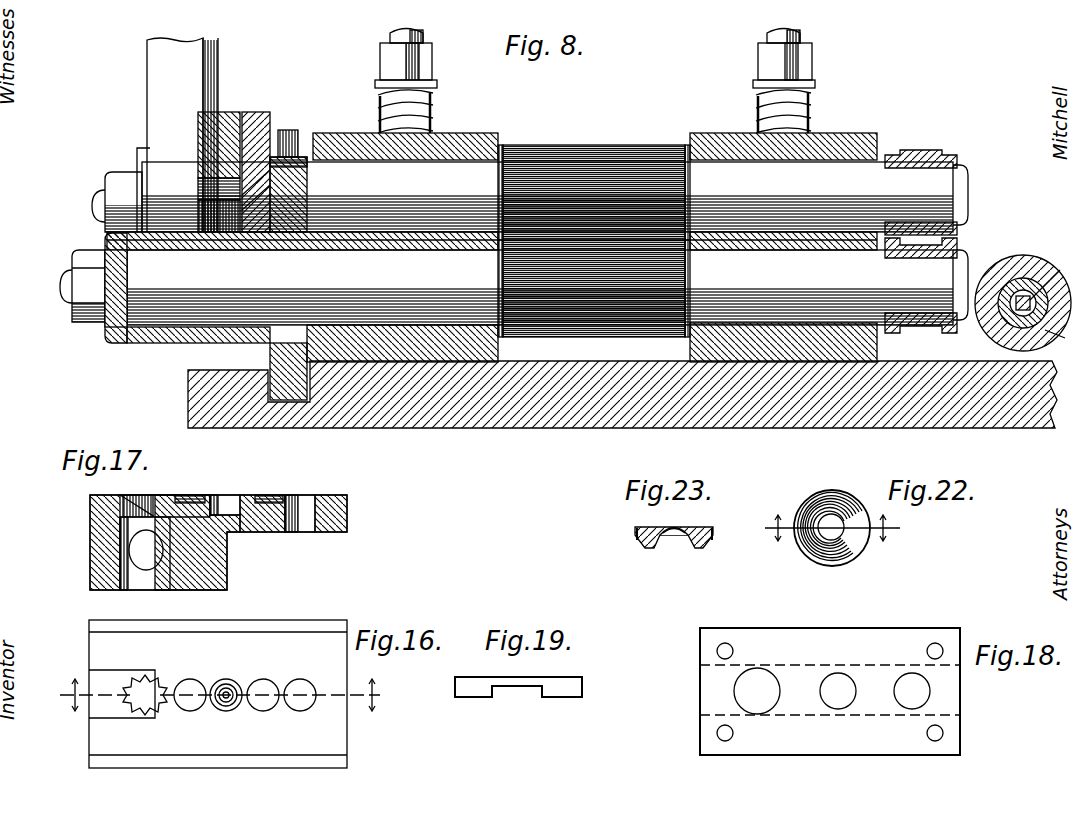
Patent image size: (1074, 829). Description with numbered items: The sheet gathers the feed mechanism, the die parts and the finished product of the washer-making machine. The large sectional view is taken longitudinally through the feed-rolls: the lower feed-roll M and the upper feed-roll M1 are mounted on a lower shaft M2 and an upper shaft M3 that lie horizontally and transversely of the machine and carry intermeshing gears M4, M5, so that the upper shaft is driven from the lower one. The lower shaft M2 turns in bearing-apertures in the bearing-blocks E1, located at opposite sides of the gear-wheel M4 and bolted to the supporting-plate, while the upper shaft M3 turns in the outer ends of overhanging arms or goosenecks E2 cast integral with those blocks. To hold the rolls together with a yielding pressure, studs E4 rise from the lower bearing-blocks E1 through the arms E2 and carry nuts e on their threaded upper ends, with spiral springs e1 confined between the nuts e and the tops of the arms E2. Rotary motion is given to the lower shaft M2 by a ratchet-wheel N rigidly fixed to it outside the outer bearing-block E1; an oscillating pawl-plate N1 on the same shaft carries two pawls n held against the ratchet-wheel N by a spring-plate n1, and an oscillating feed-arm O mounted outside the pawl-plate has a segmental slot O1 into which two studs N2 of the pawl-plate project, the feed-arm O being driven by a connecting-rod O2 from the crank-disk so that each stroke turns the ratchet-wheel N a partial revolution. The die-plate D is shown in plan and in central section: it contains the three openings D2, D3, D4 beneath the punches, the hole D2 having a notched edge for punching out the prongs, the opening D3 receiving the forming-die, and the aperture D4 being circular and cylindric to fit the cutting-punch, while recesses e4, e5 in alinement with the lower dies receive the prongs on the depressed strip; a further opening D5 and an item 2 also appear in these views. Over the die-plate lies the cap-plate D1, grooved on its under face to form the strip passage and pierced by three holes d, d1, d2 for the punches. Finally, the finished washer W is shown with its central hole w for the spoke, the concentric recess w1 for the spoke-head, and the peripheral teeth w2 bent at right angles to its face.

In FIG. 8, the ratchet-wheel N is at (300, 403).
In FIG. 8, the pawl-plate N1 is at (258, 118).
In FIG. 8, the studs N2 is at (240, 200).
In FIG. 8, the pawls n is at (293, 167).
In FIG. 8, the spring-plate n1 is at (303, 160).
In FIG. 8, the feed-arm O is at (222, 118).
In FIG. 8, the segmental slot O1 is at (200, 188).
In FIG. 8, the connecting-rod O2 is at (177, 135).
In FIG. 8, the bearing-blocks E1 is at (480, 342).
In FIG. 8, the overhanging arms E2 is at (505, 118).
In FIG. 8, the studs E4 is at (418, 32).
In FIG. 8, the nuts e is at (425, 62).
In FIG. 8, the spiral springs e1 is at (432, 112).
In FIG. 8, the lower feed-roll M is at (915, 333).
In FIG. 8, the upper feed-roll M1 is at (940, 152).
In FIG. 8, the lower shaft M2 is at (547, 287).
In FIG. 8, the upper shaft M3 is at (555, 197).
In FIG. 8, the gear M4 is at (572, 334).
In FIG. 8, the gear M5 is at (603, 157).
In FIG. 17, the die-plate D is at (215, 553).
In FIG. 16, the die-plate D is at (220, 694).
In FIG. 19, the cap-plate D1 is at (572, 686).
In FIG. 18, the cap-plate D1 is at (850, 635).
In FIG. 17, the aperture D2 is at (135, 496).
In FIG. 16, the aperture D2 is at (143, 705).
In FIG. 17, the opening D3 is at (230, 500).
In FIG. 16, the opening D3 is at (226, 708).
In FIG. 17, the aperture D4 is at (302, 500).
In FIG. 16, the aperture D4 is at (300, 705).
In FIG. 17, the side opening D5 is at (145, 572).
In FIG. 17, the recess e4 is at (200, 500).
In FIG. 17, the recess e5 is at (270, 500).
In FIG. 16, the star gear 2 is at (155, 680).
In FIG. 22, the washer W is at (832, 528).
In FIG. 23, the central hole w is at (685, 548).
In FIG. 23, the central recess w1 is at (680, 533).
In FIG. 22, the central recess w1 is at (830, 528).
In FIG. 23, the peripheral teeth w2 is at (645, 548).
In FIG. 18, the hole d is at (757, 691).
In FIG. 18, the hole d1 is at (838, 691).
In FIG. 18, the hole d2 is at (912, 691).